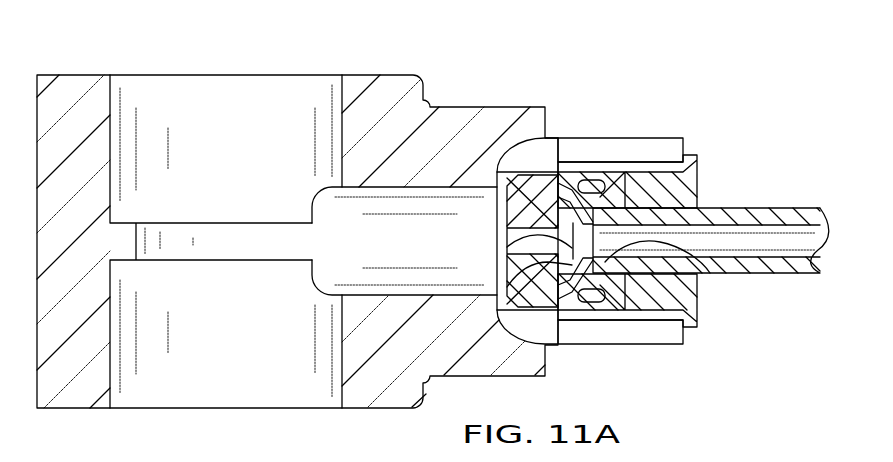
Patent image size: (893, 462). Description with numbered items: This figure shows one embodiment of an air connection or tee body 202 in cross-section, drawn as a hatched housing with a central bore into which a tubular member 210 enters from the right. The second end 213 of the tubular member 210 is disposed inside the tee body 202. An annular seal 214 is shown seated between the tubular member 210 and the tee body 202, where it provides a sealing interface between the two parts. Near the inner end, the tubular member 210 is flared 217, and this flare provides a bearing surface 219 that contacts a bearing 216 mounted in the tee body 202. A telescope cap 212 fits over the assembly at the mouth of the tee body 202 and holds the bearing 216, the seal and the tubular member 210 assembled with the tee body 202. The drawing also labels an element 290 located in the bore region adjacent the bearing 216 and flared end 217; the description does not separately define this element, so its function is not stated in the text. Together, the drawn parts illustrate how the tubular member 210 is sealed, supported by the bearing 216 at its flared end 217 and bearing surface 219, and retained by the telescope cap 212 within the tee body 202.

The tee body 202 is at (163, 75).
The insert sleeve 290 is at (505, 172).
The bearing 216 is at (545, 137).
The flared end 217 is at (528, 236).
The annular seal 214 is at (620, 162).
The telescope cap 212 is at (697, 163).
The tubular member 210 is at (805, 215).
The second end of the tubular member 213 is at (710, 273).
The bearing surface 219 is at (527, 268).